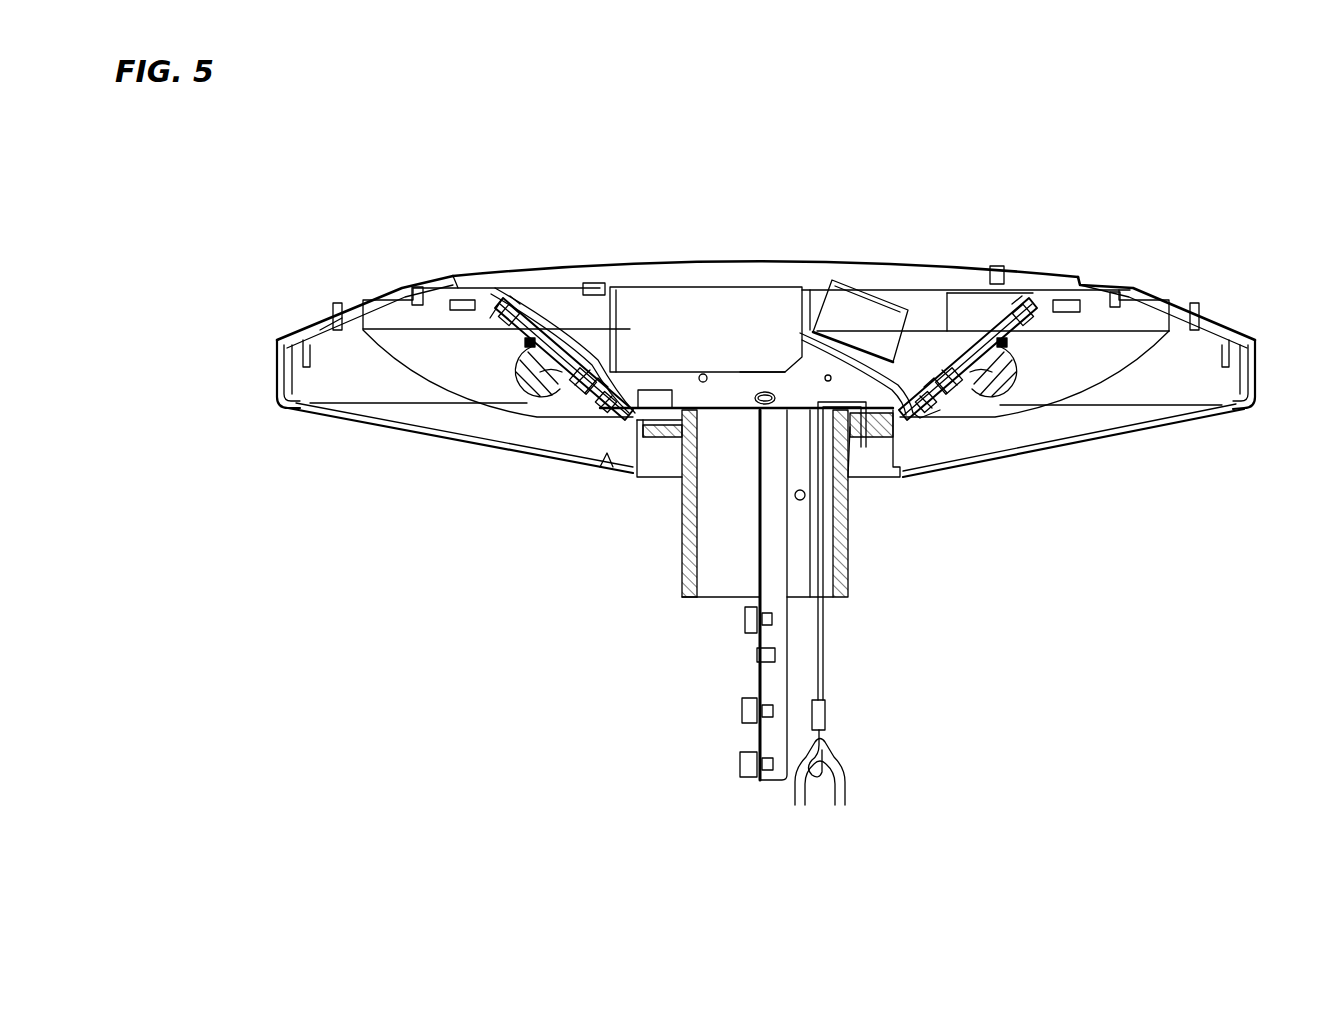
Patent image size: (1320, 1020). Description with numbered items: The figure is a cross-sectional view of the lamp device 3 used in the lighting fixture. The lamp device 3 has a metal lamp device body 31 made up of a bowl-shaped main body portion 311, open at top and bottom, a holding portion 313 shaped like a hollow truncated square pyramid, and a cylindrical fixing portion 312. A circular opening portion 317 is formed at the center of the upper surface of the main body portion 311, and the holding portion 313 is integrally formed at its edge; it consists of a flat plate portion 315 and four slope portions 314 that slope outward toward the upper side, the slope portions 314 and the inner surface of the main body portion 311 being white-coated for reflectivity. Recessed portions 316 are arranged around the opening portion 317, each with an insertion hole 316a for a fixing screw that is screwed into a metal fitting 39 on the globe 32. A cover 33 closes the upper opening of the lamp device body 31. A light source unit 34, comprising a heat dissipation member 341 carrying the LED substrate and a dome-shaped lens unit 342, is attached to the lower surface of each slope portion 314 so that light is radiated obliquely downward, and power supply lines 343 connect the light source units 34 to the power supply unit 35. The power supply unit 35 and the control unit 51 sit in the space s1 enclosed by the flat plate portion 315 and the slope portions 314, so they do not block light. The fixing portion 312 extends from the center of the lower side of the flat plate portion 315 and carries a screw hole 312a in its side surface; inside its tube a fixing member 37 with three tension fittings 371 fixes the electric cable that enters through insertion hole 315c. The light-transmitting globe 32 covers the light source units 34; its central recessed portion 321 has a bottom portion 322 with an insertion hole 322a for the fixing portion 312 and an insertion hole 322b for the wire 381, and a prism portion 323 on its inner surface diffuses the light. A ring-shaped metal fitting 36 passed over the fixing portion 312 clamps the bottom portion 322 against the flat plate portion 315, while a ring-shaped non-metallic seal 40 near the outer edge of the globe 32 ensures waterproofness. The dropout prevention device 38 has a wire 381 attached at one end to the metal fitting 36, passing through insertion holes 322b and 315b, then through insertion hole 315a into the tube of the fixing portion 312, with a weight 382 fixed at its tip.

The lamp device 3 is at (437, 258).
The lamp device body 31 is at (375, 288).
The main body portion 311 is at (1153, 297).
The fixing portion 312 is at (845, 530).
The screw hole 312a is at (690, 503).
The holding portion 313 is at (490, 320).
The slope portion 314 is at (1023, 340).
The flat plate portion 315 is at (717, 406).
The insertion hole 315a is at (850, 447).
The insertion hole 315b is at (893, 430).
The insertion hole 315c is at (747, 406).
The recessed portion 316 is at (333, 325).
The insertion hole 316a is at (333, 322).
The opening portion 317 is at (968, 305).
The globe 32 is at (480, 405).
The recessed portion 321 is at (667, 470).
The bottom portion 322 is at (662, 405).
The insertion hole 322a is at (684, 405).
The insertion hole 322b is at (910, 455).
The prism portion 323 is at (610, 457).
The cover 33 is at (583, 268).
The light source unit 34 is at (522, 387).
The heat dissipation member 341 is at (560, 382).
The lens unit 342 is at (545, 400).
The power supply line 343 is at (618, 400).
The power supply unit 35 is at (782, 315).
The metal fitting 36 is at (648, 450).
The fixing member 37 is at (773, 677).
The tension fitting 371 is at (745, 625).
The dropout prevention device 38 is at (825, 720).
The wire 381 is at (823, 643).
The weight 382 is at (843, 787).
The metal fitting 39 is at (320, 360).
The non-metallic seal 40 is at (297, 355).
The control unit 51 is at (843, 300).
The space s1 is at (925, 315).